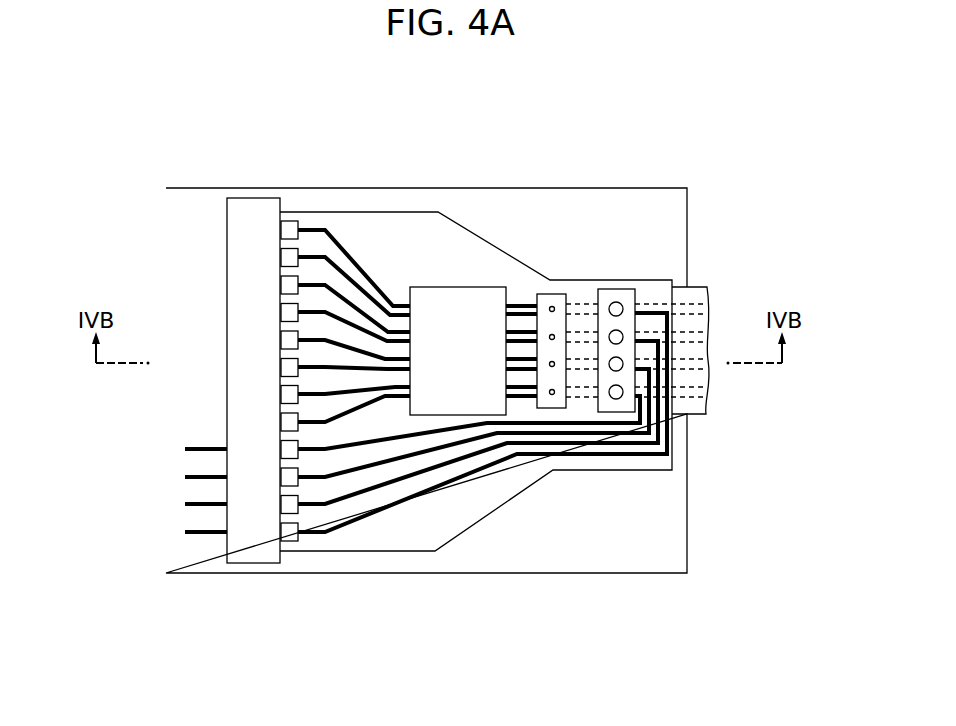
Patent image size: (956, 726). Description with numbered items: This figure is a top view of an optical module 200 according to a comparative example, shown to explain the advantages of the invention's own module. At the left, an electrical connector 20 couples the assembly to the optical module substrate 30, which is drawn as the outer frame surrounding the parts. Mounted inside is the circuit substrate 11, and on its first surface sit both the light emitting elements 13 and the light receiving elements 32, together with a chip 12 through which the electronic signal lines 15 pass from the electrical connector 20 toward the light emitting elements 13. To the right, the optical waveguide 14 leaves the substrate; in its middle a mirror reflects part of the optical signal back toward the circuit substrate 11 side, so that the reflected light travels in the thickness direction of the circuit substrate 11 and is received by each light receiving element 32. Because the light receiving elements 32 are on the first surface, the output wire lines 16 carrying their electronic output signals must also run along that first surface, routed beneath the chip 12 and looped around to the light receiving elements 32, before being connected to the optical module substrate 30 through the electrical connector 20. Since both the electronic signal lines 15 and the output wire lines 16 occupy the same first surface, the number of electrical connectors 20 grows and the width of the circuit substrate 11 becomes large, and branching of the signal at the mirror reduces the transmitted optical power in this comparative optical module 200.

The optical module 200 is at (697, 137).
The optical module substrate 30 is at (628, 543).
The electrical connector 20 is at (260, 213).
The circuit substrate 11 is at (418, 227).
The driver integrated circuit chip 12 is at (462, 307).
The electronic signal lines 15 is at (358, 421).
The output wire lines 16 is at (399, 432).
The light emitting element 13 is at (552, 306).
The light receiving element 32 is at (616, 302).
The optical waveguide 14 is at (703, 285).